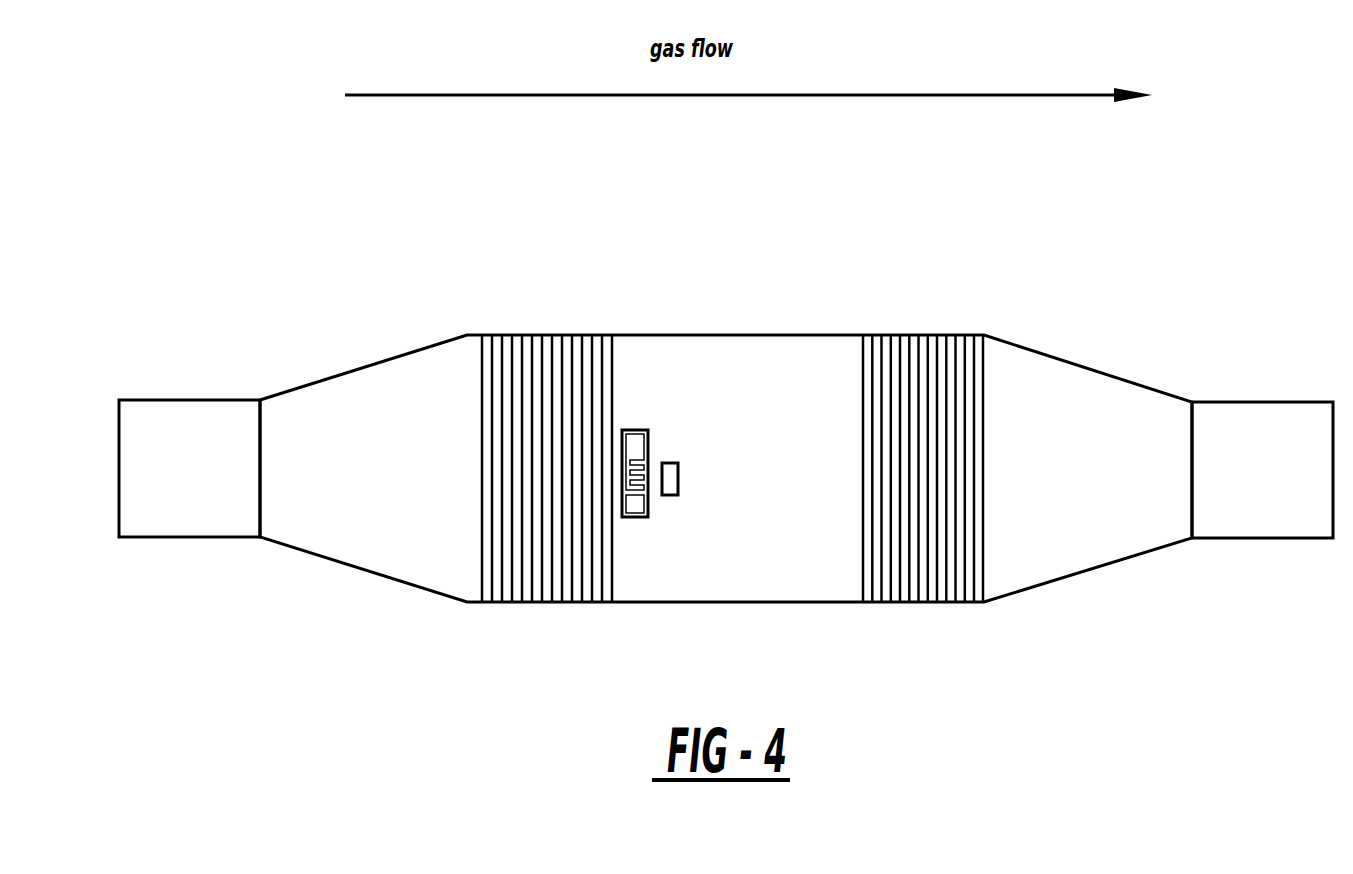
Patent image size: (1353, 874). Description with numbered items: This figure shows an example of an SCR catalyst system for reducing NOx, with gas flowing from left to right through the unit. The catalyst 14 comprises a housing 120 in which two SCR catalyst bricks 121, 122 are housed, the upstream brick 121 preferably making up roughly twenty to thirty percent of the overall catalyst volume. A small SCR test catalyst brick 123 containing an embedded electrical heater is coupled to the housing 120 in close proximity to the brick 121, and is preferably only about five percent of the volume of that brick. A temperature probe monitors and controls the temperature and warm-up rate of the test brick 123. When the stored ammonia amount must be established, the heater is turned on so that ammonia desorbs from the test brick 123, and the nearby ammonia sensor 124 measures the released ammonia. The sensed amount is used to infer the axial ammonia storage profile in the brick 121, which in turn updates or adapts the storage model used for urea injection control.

The catalyst 14 is at (1237, 222).
The housing 120 is at (362, 367).
The brick 121 is at (530, 527).
The brick 122 is at (950, 530).
The SCR test catalyst brick 123 is at (638, 431).
The ammonia sensor 124 is at (672, 465).